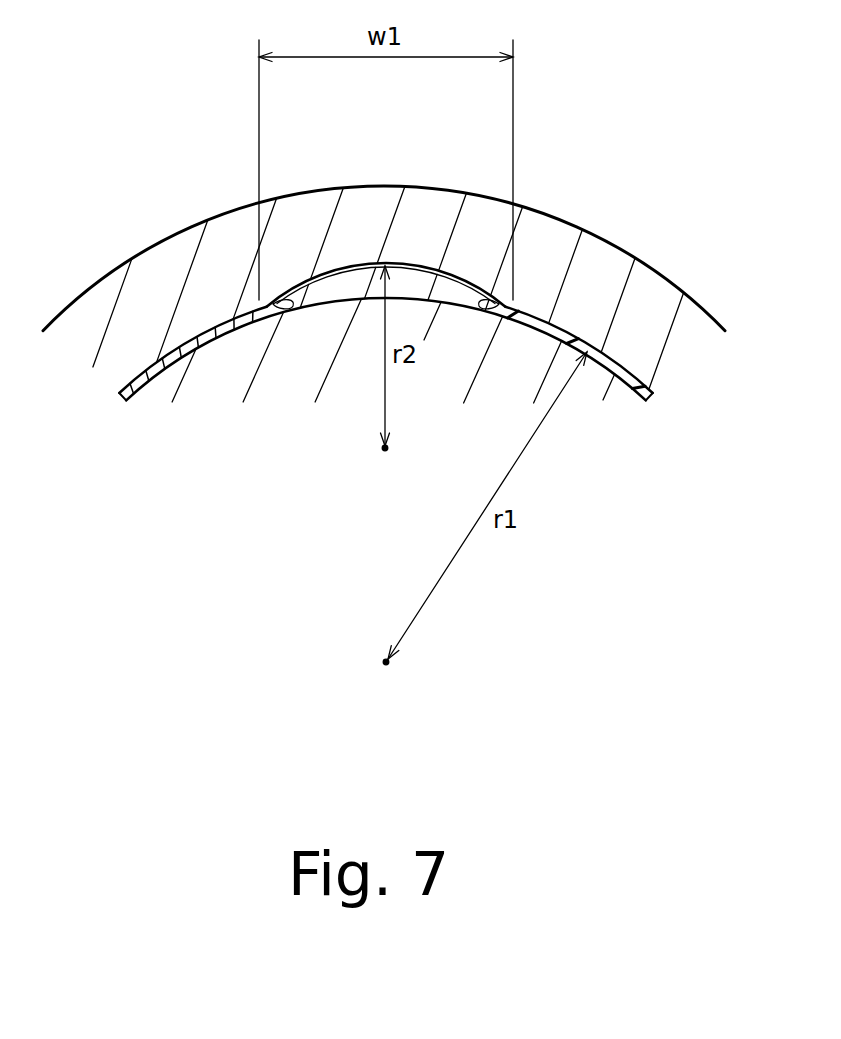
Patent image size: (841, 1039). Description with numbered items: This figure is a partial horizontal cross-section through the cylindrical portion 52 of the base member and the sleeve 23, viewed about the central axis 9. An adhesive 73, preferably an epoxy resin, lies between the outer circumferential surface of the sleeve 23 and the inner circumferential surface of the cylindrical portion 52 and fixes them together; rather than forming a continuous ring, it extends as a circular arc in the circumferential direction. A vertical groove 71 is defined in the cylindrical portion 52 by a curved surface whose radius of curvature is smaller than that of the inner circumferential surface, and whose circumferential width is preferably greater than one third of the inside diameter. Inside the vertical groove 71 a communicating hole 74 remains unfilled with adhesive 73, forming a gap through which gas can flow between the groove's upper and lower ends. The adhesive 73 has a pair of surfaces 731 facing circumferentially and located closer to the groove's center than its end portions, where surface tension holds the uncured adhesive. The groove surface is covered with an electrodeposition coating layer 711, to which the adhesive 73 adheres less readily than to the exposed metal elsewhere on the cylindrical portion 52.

The cylindrical portion 52 is at (160, 283).
The adhesive 73 is at (650, 393).
The pair of surfaces 731 is at (283, 300).
The communicating hole 74 is at (415, 266).
The vertical groove 71 is at (333, 285).
The electrodeposition coating layer 711 is at (462, 296).
The sleeve 23 is at (230, 362).
The central axis 9 is at (381, 669).